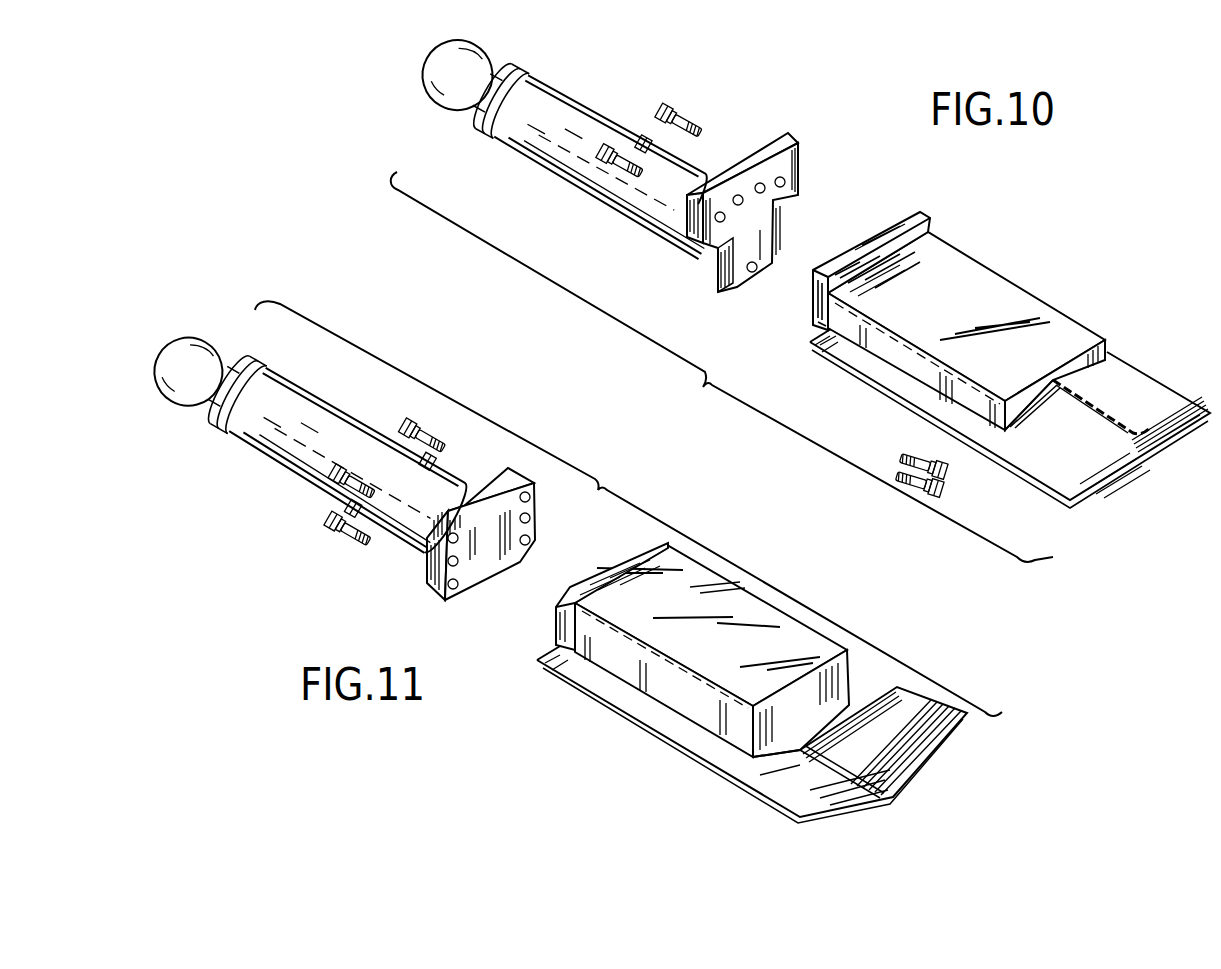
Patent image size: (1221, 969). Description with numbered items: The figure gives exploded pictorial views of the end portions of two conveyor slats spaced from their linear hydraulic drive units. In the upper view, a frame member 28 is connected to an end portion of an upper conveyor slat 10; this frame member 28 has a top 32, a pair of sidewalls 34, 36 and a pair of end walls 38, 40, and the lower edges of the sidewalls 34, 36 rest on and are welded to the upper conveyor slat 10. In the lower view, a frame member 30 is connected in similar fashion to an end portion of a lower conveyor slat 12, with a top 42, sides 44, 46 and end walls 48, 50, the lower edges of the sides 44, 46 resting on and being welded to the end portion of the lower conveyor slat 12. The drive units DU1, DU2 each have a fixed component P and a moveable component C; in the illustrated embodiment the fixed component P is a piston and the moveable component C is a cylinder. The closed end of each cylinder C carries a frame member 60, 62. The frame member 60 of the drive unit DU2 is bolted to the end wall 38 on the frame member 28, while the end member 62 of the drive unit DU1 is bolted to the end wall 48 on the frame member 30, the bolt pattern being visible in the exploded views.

In FIG. 10, the upper conveyor slat 10 is at (1110, 443).
In FIG. 11, the lower conveyor slat 12 is at (933, 748).
In FIG. 10, the frame member 28 is at (970, 297).
In FIG. 11, the frame member 30 is at (733, 608).
In FIG. 10, the top 32 is at (1013, 307).
In FIG. 10, the sidewall 34 is at (902, 362).
In FIG. 10, the sidewall 36 is at (1107, 350).
In FIG. 10, the end wall 38 is at (880, 232).
In FIG. 10, the end wall 40 is at (1017, 407).
In FIG. 11, the top 42 is at (793, 637).
In FIG. 11, the side 44 is at (617, 663).
In FIG. 11, the side 46 is at (842, 675).
In FIG. 11, the end wall 48 is at (602, 567).
In FIG. 11, the end wall 50 is at (775, 740).
In FIG. 10, the frame member 60 is at (740, 235).
In FIG. 11, the end member 62 is at (483, 573).
In FIG. 10, the fixed component P is at (478, 42).
In FIG. 11, the fixed component P is at (200, 347).
In FIG. 10, the moveable component C is at (633, 190).
In FIG. 11, the moveable component C is at (442, 487).
In FIG. 11, the drive unit DU1 is at (303, 420).
In FIG. 10, the drive unit DU2 is at (570, 110).